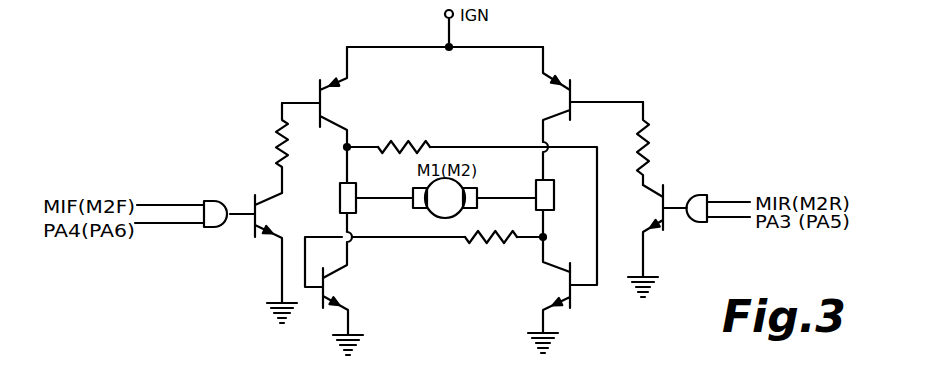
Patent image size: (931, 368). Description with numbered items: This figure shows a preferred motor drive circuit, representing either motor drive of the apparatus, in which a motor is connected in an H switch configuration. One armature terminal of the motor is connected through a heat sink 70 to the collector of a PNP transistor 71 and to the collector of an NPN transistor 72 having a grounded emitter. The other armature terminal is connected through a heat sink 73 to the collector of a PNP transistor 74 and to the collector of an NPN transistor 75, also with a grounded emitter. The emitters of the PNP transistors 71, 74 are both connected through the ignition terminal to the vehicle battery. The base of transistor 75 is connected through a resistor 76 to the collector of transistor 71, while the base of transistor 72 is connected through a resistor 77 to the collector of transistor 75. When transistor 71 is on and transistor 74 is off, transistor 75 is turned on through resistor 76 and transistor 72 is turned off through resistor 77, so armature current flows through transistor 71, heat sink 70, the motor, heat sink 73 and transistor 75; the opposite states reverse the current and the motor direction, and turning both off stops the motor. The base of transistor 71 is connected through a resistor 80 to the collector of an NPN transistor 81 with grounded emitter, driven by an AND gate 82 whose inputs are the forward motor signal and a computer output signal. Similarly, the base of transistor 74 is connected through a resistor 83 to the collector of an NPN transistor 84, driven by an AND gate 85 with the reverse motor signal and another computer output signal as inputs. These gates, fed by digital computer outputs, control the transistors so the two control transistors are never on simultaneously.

The heat sink 70 is at (340, 200).
The PNP transistor 71 is at (320, 88).
The NPN transistor 72 is at (338, 272).
The heat sink 73 is at (554, 195).
The PNP transistor 74 is at (573, 92).
The NPN transistor 75 is at (558, 270).
The resistor 76 is at (392, 143).
The resistor 77 is at (497, 243).
The resistor 80 is at (278, 155).
The NPN transistor 81 is at (255, 222).
The AND gate 82 is at (230, 182).
The resistor 83 is at (648, 145).
The NPN transistor 84 is at (668, 195).
The AND gate 85 is at (692, 222).